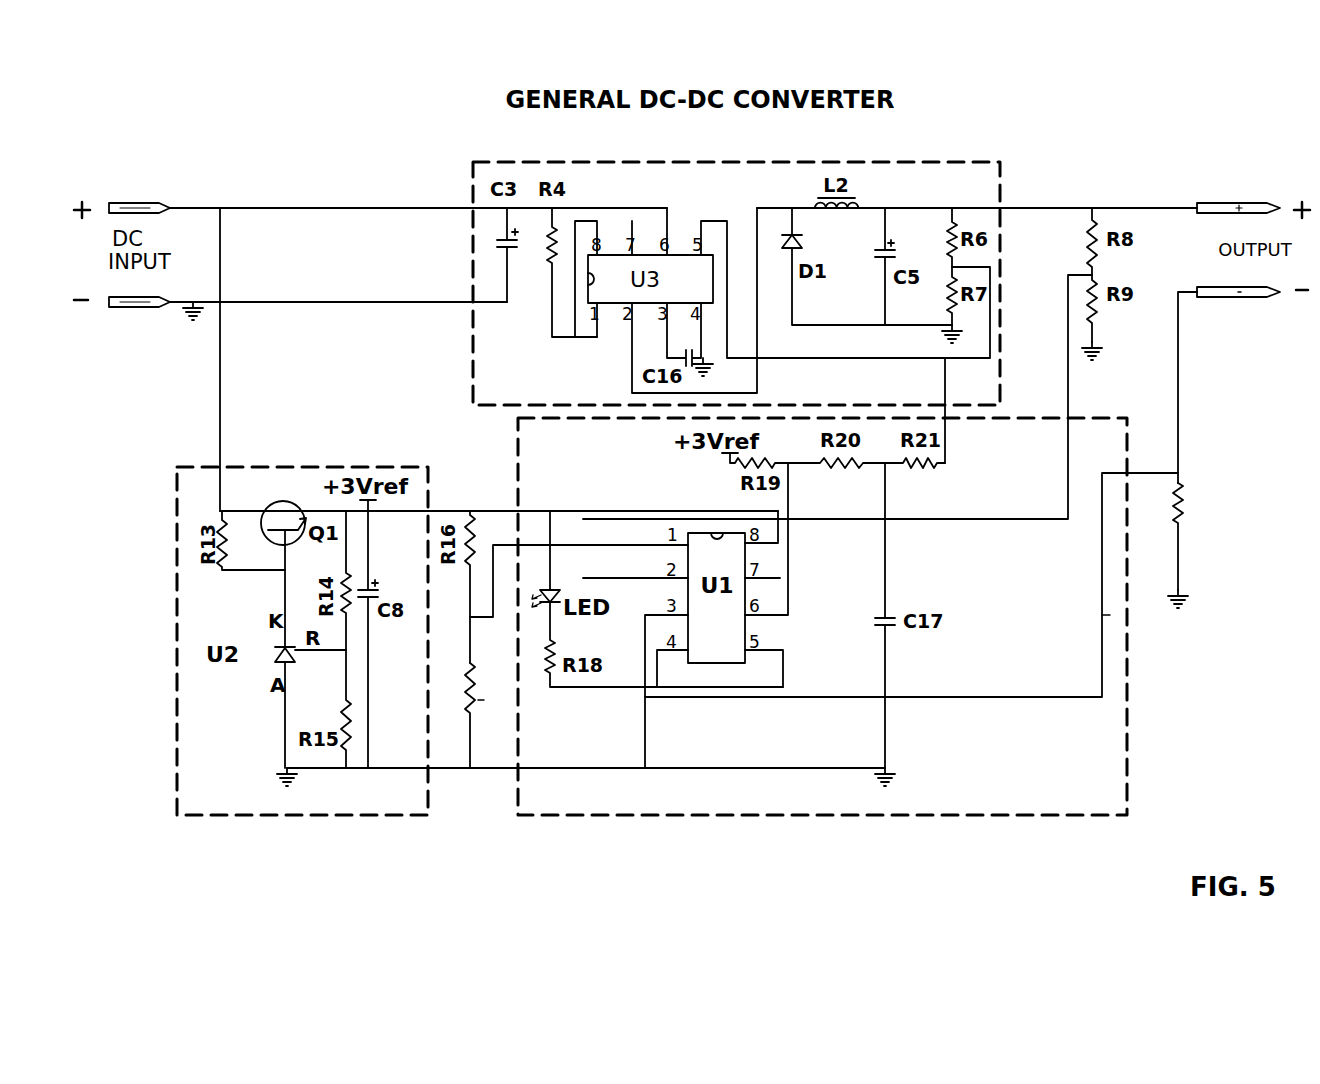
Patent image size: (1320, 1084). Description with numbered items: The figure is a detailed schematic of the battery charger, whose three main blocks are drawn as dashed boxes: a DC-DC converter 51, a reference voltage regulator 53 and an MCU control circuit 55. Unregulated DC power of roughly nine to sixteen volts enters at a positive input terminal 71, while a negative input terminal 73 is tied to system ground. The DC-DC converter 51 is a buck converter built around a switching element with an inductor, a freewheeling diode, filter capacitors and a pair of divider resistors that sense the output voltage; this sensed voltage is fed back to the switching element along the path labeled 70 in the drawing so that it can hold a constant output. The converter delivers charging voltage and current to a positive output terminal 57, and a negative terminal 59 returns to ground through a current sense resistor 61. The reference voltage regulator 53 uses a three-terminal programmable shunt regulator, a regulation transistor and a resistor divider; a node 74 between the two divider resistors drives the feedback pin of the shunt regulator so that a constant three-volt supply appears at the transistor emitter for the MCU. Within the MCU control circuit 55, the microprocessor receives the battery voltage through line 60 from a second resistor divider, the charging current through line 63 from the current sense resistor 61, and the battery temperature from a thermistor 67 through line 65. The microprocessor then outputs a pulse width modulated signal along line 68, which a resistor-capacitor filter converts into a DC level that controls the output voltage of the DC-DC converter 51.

The DC-DC converter 51 is at (997, 188).
The reference voltage regulator 53 is at (177, 628).
The microprocessor unit (MCU) 55 is at (1128, 757).
The positive output terminal 57 is at (1248, 205).
The negative terminal 59 is at (1252, 298).
The line 60 is at (1070, 483).
The current sense resistor 61 is at (1190, 523).
The line 63 is at (1028, 693).
The line 65 is at (497, 540).
The thermistor 67 is at (480, 722).
The line 68 is at (790, 592).
The feedback node line 70 is at (863, 360).
The positive input terminal 71 is at (132, 200).
The negative input terminal 73 is at (142, 310).
The node 74 is at (350, 652).